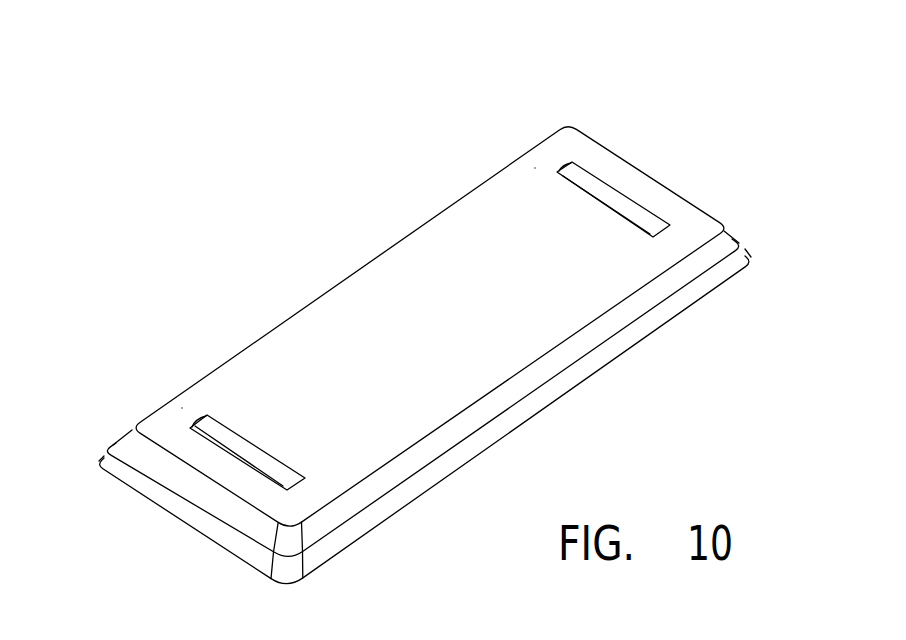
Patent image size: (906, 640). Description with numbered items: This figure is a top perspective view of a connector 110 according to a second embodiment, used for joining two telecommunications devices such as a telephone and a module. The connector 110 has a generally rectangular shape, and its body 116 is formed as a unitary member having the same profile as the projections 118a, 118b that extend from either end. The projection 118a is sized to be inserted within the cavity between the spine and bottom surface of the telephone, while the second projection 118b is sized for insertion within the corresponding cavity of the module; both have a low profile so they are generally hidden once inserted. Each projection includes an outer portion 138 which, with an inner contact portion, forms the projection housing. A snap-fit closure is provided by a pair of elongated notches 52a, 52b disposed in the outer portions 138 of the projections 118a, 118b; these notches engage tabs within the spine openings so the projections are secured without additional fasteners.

The connector 110 is at (668, 135).
The body 116 is at (410, 365).
The projection 118a is at (571, 138).
The second projection 118b is at (155, 425).
The outer portion 138 is at (535, 168).
The elongated notch 52a is at (644, 218).
The elongated notch 52b is at (272, 467).